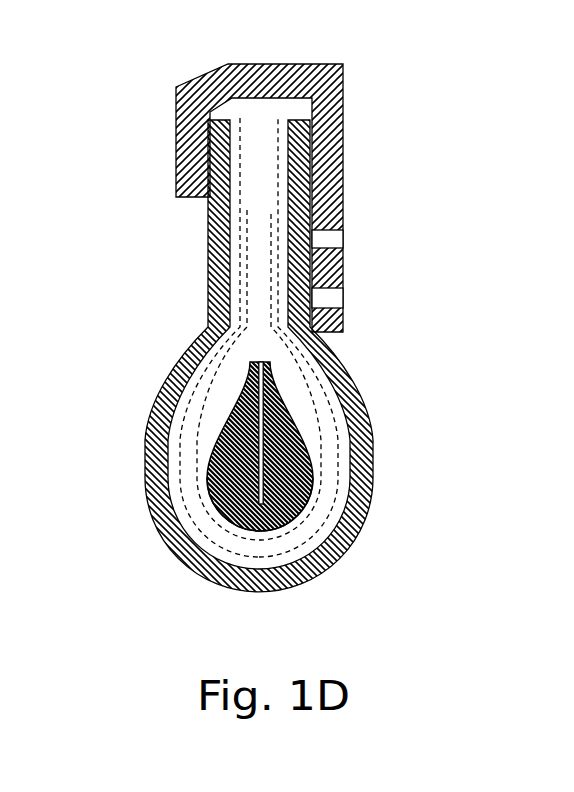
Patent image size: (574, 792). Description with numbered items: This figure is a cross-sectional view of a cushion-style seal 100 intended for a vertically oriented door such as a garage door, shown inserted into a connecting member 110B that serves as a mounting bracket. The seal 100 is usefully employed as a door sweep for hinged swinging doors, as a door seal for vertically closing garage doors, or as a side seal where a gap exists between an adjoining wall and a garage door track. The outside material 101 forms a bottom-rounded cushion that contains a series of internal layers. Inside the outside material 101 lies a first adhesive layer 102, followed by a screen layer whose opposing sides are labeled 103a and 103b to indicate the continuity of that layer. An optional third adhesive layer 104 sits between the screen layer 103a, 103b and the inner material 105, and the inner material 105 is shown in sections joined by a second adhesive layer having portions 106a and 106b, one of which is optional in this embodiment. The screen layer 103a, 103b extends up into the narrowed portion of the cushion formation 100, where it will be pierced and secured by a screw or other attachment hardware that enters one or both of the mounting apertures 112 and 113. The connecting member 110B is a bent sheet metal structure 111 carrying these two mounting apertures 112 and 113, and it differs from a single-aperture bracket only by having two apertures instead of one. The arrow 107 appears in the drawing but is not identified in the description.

The cushion-style seal 100 is at (86, 595).
The outside material 101 is at (215, 250).
The first adhesive layer 102 is at (247, 288).
The screen layer 103a is at (230, 392).
The screen layer 103b is at (318, 398).
The third adhesive layer 104 is at (218, 508).
The inner material 105 is at (218, 462).
The second adhesive layer 106a is at (228, 500).
The second adhesive layer 106b is at (266, 469).
The fluid flow direction 107 is at (258, 147).
The connecting member 110B is at (404, 26).
The bent sheet metal structure 111 is at (278, 72).
The mounting aperture 112 is at (344, 240).
The mounting aperture 113 is at (344, 298).